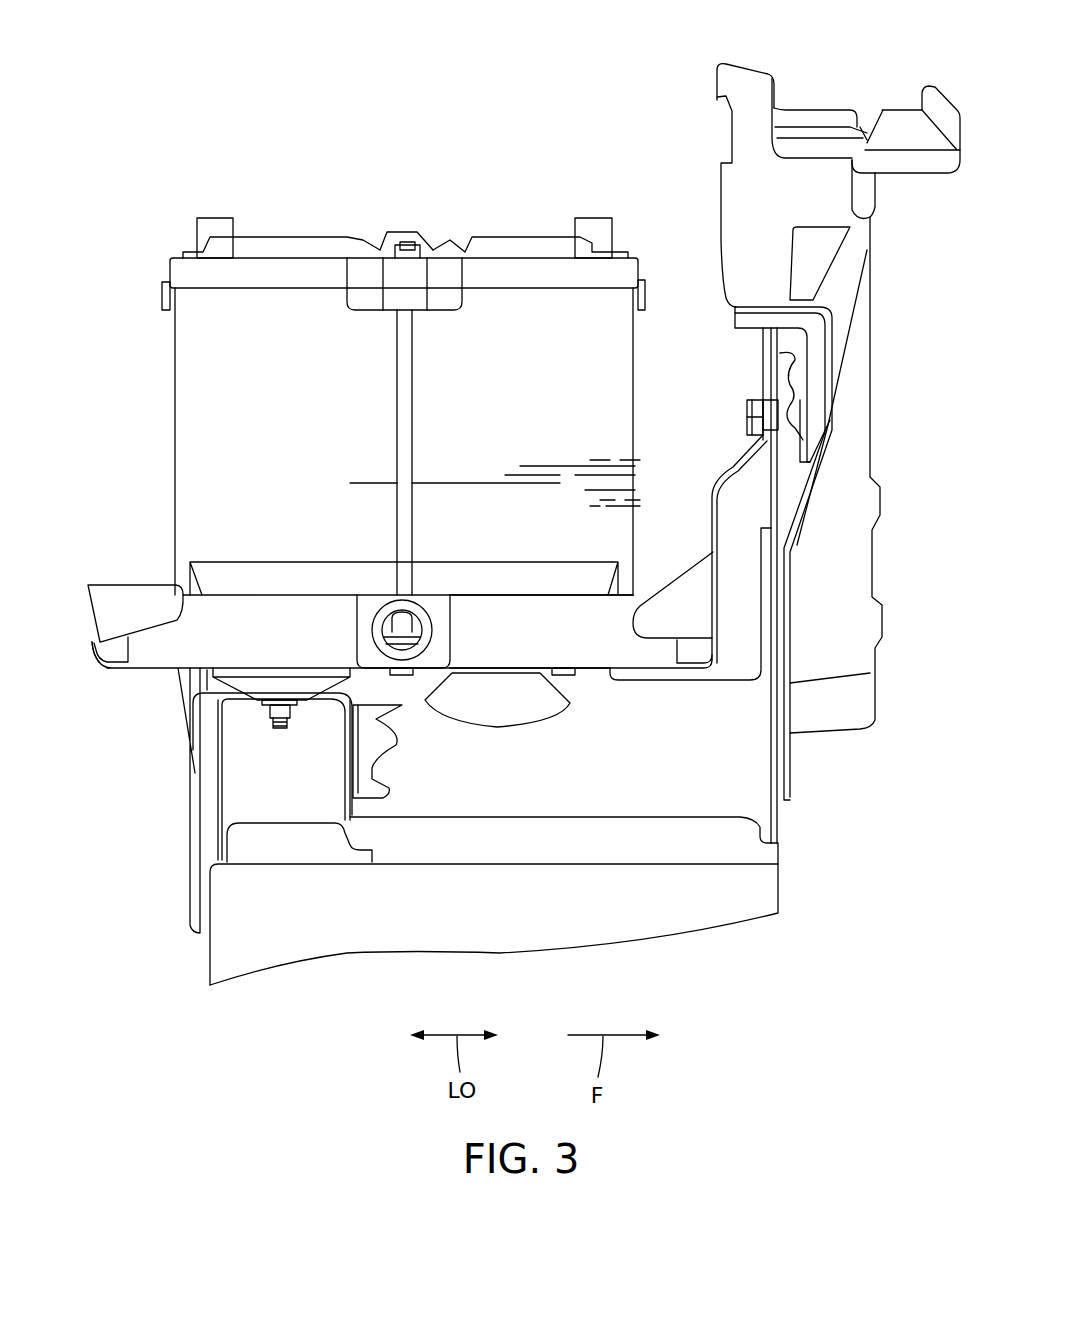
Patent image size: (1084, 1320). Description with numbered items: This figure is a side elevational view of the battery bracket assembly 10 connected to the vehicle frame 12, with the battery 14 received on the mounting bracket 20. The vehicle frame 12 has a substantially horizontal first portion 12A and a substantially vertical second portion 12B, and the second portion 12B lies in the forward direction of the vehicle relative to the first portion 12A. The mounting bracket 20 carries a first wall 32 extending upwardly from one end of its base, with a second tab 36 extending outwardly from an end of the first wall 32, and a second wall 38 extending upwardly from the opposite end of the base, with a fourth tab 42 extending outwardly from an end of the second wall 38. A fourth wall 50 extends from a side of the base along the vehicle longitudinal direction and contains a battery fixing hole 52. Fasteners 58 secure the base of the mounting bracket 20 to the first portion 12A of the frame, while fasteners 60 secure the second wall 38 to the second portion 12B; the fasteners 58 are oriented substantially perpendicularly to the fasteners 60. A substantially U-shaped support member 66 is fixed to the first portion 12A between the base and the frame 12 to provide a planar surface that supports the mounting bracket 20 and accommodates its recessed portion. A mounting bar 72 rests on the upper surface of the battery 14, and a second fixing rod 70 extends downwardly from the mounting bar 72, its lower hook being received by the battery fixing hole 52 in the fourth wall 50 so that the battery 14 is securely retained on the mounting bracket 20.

The battery bracket assembly 10 is at (64, 613).
The vehicle frame 12 is at (880, 558).
The first portion 12A is at (733, 677).
The second portion 12B is at (783, 342).
The battery 14 is at (175, 408).
The mounting bracket 20 is at (106, 678).
The first wall 32 is at (92, 650).
The second tab 36 is at (120, 605).
The second wall 38 is at (737, 467).
The fourth tab 42 is at (683, 608).
The fourth wall 50 is at (587, 637).
The battery fixing hole 52 is at (422, 625).
The fastener 58 is at (262, 728).
The fastener 60 is at (747, 415).
The support member 66 is at (357, 690).
The second fixing rod 70 is at (413, 393).
The mounting bar 72 is at (382, 232).